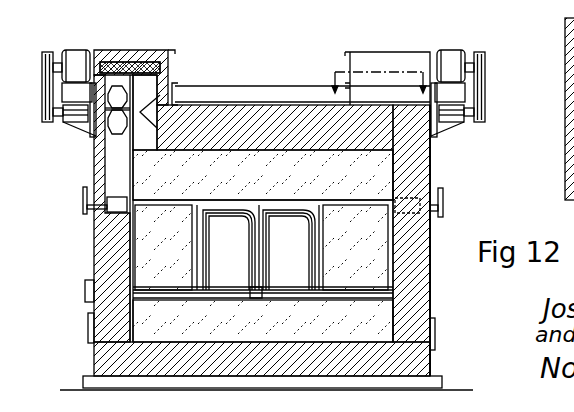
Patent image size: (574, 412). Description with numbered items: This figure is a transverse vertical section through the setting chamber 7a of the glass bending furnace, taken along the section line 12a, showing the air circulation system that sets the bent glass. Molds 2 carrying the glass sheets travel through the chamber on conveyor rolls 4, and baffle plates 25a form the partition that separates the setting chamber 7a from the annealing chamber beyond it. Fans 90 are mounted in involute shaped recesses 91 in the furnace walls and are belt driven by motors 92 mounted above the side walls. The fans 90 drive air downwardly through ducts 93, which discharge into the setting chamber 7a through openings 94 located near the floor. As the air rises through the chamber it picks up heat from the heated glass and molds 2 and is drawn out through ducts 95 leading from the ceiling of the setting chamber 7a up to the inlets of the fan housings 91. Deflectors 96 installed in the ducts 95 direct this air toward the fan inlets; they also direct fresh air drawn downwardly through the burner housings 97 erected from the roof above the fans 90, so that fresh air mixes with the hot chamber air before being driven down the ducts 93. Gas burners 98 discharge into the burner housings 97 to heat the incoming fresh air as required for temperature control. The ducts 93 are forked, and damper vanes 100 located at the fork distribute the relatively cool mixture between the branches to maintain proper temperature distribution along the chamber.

The mold 2 is at (259, 289).
The conveyor roll 4 is at (226, 295).
The setting chamber 7a is at (245, 117).
The section line 12a is at (364, 86).
The baffle plate 25a is at (423, 262).
The fan 90 is at (112, 124).
The involute shaped recess 91 is at (118, 144).
The motor 92 is at (75, 60).
The duct 93 is at (112, 254).
The opening 94 is at (396, 333).
The duct 95 is at (263, 175).
The deflector 96 is at (176, 85).
The burner housing 97 is at (150, 57).
The gas burner 98 is at (105, 61).
The damper vane 100 is at (106, 203).